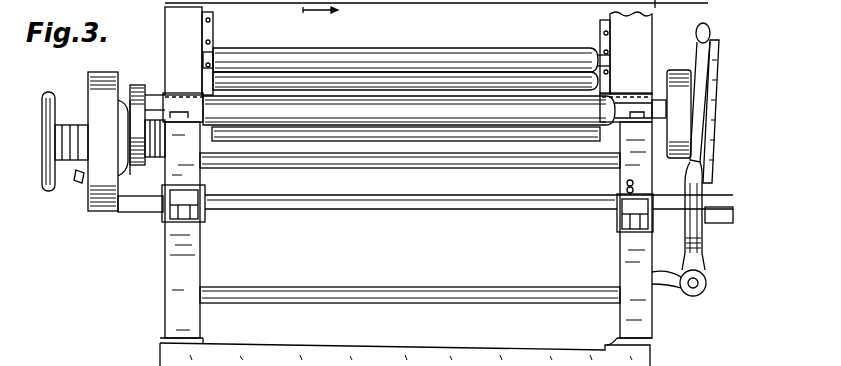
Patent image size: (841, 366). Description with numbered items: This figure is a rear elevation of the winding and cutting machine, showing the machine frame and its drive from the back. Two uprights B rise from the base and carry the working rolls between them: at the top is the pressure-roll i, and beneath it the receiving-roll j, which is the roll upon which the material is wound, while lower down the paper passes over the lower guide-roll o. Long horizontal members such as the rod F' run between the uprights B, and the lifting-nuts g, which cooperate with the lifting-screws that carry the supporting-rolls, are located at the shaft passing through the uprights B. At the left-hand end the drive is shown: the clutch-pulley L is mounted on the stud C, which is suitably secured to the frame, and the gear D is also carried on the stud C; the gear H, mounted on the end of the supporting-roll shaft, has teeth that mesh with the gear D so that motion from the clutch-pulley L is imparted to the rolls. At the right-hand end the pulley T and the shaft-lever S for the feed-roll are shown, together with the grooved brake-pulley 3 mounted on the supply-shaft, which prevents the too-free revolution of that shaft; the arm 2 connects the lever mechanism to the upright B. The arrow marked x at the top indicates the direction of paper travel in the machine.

The uprights B is at (414, 64).
The stud C is at (160, 143).
The clutch-pulley L is at (103, 141).
The gear H is at (133, 88).
The gear D is at (151, 152).
The rod F' is at (410, 152).
The pressure-roll i is at (452, 58).
The receiving-roll j is at (510, 75).
The lifting-nuts g is at (425, 209).
The lower guide-roll o is at (410, 296).
The pulley T is at (688, 55).
The shaft-lever S is at (704, 103).
The arm 2 is at (673, 288).
The grooved pulley 3 is at (701, 246).
The direction arrow x is at (328, 13).